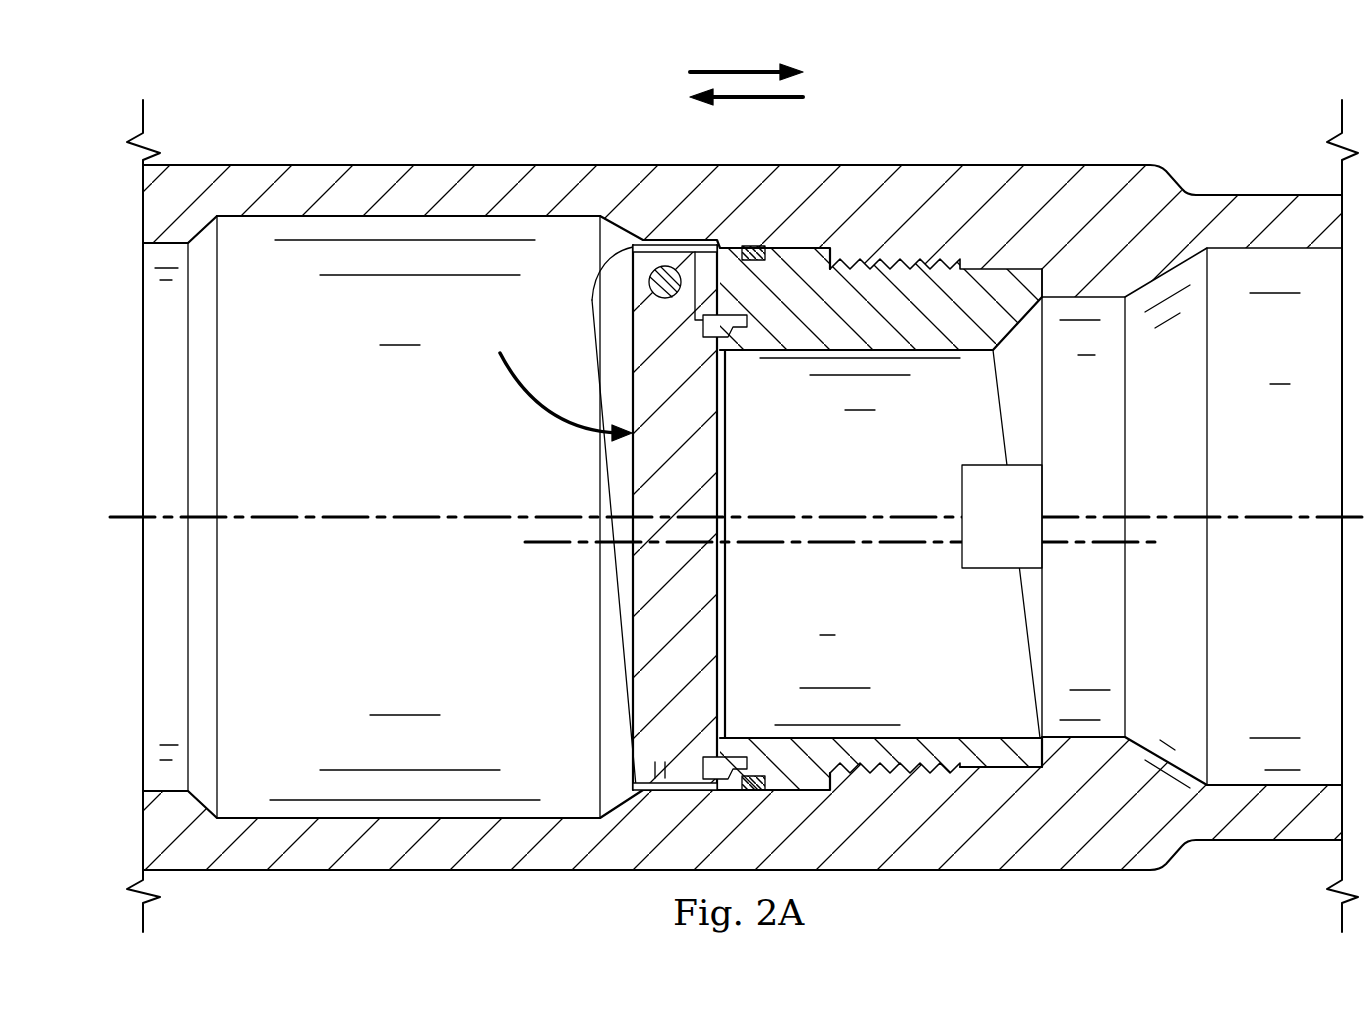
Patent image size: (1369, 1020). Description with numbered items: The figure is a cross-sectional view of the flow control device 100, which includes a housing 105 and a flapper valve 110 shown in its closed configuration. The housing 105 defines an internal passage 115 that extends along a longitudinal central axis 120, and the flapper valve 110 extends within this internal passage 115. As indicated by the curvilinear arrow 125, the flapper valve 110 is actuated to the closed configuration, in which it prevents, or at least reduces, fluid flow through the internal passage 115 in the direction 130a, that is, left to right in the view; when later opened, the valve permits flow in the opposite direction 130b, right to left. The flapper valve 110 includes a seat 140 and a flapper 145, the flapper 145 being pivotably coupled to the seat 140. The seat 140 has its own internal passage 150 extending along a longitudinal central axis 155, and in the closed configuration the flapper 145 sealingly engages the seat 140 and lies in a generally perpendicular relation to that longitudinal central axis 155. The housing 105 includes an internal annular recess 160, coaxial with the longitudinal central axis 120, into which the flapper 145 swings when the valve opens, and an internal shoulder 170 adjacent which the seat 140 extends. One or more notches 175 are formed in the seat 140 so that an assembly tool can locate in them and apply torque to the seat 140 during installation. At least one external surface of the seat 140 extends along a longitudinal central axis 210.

The coupling assembly 100 is at (335, 89).
The housing 105 is at (420, 878).
The flapper valve 110 is at (870, 795).
The internal passage 115 is at (430, 662).
The longitudinal central axis 120 is at (341, 520).
The curvilinear arrow 125 is at (533, 390).
The direction 130a is at (745, 68).
The direction 130b is at (748, 103).
The seat 140 is at (897, 748).
The flapper 145 is at (643, 638).
The internal passage 150 is at (875, 598).
The longitudinal central axis 155 is at (548, 545).
The internal annular recess 160 is at (270, 217).
The internal shoulder 170 is at (1042, 752).
The notches 175 is at (962, 472).
The longitudinal central axis 210 is at (1290, 520).